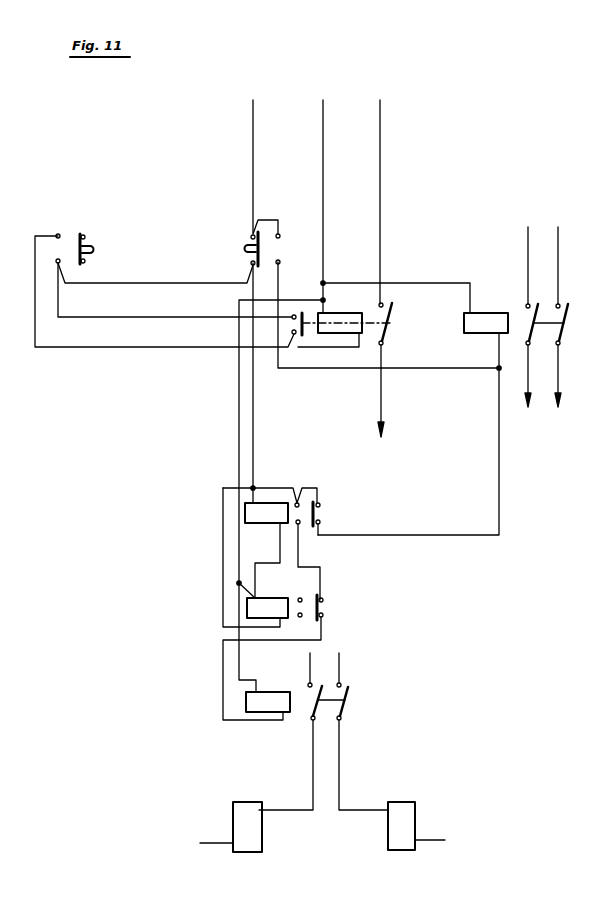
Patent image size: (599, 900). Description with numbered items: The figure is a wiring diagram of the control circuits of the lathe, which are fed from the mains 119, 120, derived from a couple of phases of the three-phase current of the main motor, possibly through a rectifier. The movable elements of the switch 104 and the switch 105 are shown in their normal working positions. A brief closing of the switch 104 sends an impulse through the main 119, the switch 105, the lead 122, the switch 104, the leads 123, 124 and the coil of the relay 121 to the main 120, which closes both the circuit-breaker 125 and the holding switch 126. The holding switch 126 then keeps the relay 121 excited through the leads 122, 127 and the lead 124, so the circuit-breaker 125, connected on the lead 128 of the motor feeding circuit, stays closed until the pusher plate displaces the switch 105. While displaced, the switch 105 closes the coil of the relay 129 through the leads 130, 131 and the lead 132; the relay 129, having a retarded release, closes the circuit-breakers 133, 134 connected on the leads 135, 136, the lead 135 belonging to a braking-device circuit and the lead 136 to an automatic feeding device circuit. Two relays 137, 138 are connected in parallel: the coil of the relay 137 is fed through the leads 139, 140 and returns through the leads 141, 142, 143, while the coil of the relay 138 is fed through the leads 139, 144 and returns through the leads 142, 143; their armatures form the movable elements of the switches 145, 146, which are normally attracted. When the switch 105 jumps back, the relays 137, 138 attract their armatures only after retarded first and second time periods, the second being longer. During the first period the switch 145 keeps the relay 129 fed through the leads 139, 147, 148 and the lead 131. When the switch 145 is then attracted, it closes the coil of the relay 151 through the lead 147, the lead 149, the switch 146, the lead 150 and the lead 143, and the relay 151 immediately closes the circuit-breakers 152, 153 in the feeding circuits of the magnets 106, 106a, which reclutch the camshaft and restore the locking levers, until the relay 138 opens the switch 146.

The switch 104 is at (79, 240).
The switch 105 is at (248, 256).
The magnet 106 is at (252, 815).
The magnet 106a is at (403, 815).
The main 119 is at (253, 158).
The main 120 is at (323, 163).
The relay 121 is at (340, 313).
The lead 122 is at (166, 282).
The lead 123 is at (144, 347).
The lead 124 is at (320, 368).
The circuit-breaker 125 is at (386, 318).
The holding switch 126 is at (296, 313).
The lead 127 is at (166, 316).
The lead 128 is at (380, 160).
The relay 129 is at (490, 313).
The lead 130 is at (430, 368).
The lead 131 is at (500, 430).
The lead 132 is at (420, 283).
The circuit-breaker 133 is at (536, 306).
The circuit-breaker 134 is at (566, 306).
The lead 135 is at (528, 228).
The lead 136 is at (558, 228).
The relay 137 is at (280, 510).
The relay 138 is at (275, 605).
The lead 139 is at (253, 413).
The lead 140 is at (223, 490).
The lead 141 is at (280, 546).
The lead 142 is at (240, 592).
The lead 143 is at (239, 388).
The lead 144 is at (223, 556).
The switch 145 is at (318, 513).
The switch 146 is at (324, 612).
The lead 147 is at (272, 488).
The lead 148 is at (321, 487).
The lead 149 is at (300, 553).
The lead 150 is at (223, 680).
The relay 151 is at (262, 712).
The circuit-breaker 152 is at (322, 688).
The circuit-breaker 153 is at (346, 700).